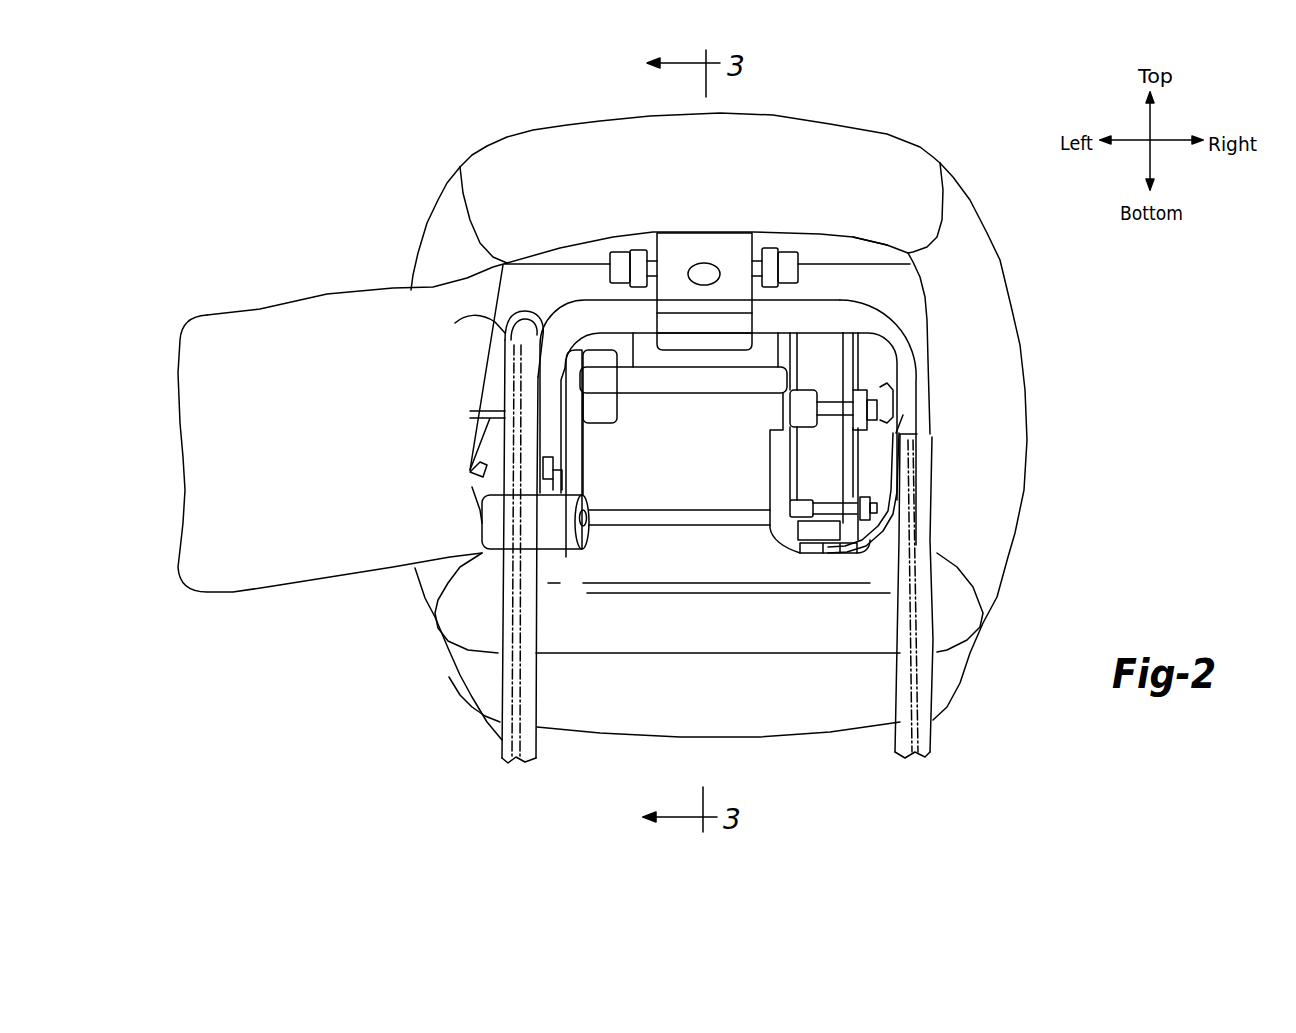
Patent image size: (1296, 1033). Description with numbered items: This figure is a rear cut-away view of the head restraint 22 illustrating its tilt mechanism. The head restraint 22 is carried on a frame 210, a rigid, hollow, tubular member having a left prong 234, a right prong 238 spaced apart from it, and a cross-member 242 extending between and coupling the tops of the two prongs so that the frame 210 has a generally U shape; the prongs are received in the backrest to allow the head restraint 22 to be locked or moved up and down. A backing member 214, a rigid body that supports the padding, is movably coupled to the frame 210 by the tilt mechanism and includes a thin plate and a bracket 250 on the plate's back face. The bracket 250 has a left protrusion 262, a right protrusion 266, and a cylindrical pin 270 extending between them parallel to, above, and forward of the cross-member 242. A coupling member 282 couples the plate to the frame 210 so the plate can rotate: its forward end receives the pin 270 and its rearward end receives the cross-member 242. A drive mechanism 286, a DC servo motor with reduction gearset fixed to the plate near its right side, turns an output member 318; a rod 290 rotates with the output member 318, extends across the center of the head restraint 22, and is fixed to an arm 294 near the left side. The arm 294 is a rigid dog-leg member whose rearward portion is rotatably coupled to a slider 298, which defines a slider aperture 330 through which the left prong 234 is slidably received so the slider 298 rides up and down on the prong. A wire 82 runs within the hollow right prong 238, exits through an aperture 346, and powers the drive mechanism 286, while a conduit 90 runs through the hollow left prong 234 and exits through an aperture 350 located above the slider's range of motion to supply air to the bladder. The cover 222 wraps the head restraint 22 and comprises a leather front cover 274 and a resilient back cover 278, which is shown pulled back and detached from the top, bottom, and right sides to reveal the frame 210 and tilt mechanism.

The head restraint 22 is at (437, 100).
The wire 82 is at (882, 529).
The conduit 90 is at (480, 317).
The frame 210 is at (500, 738).
The backing member 214 is at (878, 288).
The cover 222 is at (432, 218).
The left prong 234 is at (505, 673).
The right prong 238 is at (930, 693).
The cross-member 242 is at (833, 312).
The bracket 250 is at (628, 248).
The left protrusion 262 is at (600, 277).
The right protrusion 266 is at (788, 258).
The pin 270 is at (650, 258).
The front cover 274 is at (783, 131).
The back cover 278 is at (250, 340).
The coupling member 282 is at (737, 250).
The drive mechanism 286 is at (817, 353).
The rod 290 is at (690, 385).
The arm 294 is at (584, 466).
The slider 298 is at (490, 517).
The output member 318 is at (780, 383).
The slider aperture 330 is at (540, 535).
The aperture 346 is at (905, 413).
The aperture 350 is at (500, 380).